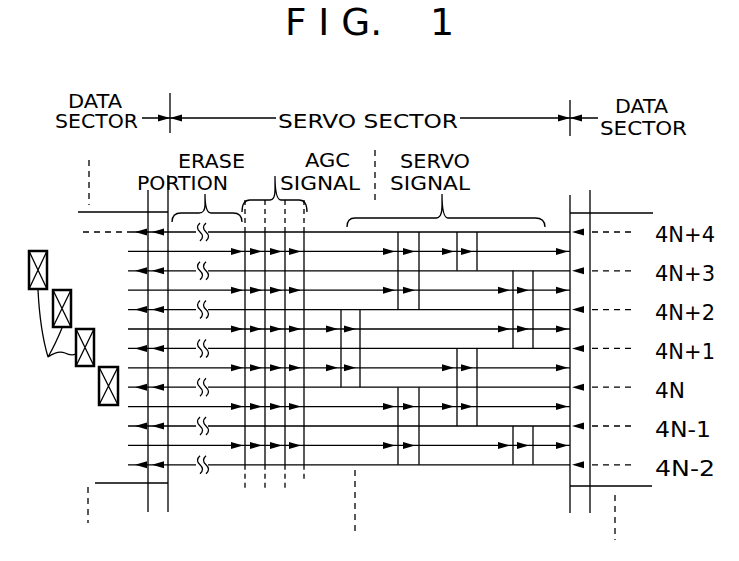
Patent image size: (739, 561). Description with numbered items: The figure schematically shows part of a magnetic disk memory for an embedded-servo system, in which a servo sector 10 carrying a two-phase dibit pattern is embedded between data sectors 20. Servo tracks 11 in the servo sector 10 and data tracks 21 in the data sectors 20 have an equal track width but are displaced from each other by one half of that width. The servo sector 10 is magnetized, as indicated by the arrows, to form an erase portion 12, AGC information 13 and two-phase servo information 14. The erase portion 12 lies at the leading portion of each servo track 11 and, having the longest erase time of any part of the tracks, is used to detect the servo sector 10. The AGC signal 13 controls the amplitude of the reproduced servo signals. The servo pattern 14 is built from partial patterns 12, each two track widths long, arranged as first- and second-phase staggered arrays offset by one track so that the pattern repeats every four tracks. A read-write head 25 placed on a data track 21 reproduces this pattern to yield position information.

The servo sector 10 is at (410, 531).
The servo track 11 is at (552, 232).
The erase portion 12 is at (522, 485).
The AGC information 13 is at (306, 230).
The two-phase servo information 14 is at (496, 205).
The data sector 20 is at (682, 523).
The data track 21 is at (614, 225).
The head 25 is at (99, 390).